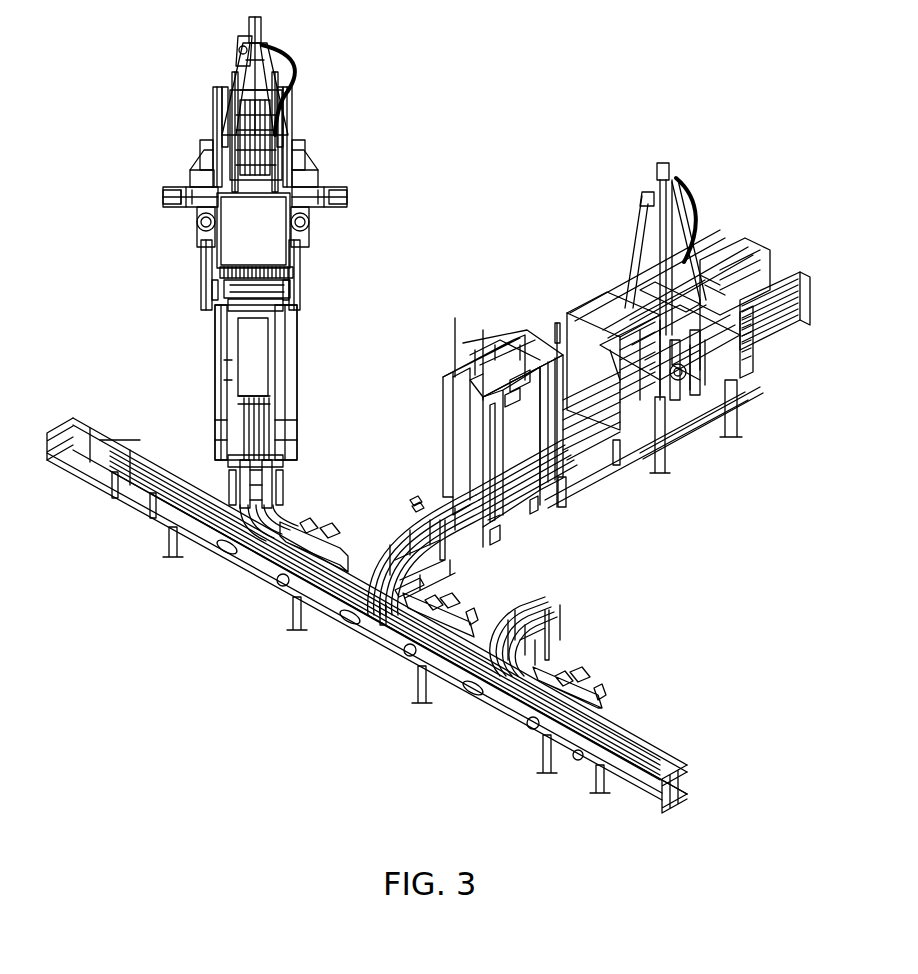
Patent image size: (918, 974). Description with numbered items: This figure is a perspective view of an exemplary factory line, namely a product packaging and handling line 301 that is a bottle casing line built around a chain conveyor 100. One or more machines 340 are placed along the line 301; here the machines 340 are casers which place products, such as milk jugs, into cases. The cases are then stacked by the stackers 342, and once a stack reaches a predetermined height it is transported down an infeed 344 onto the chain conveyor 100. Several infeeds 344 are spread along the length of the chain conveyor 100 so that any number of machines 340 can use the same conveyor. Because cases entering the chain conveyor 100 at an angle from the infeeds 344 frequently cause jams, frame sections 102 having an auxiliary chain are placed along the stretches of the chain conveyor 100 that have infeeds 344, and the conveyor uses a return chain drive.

The chain conveyor 100 is at (128, 508).
The frame sections 102 is at (226, 548).
The product packaging and handling line 301 is at (148, 348).
The machines 340 is at (348, 200).
The stackers 342 is at (297, 373).
The infeeds 344 is at (279, 515).